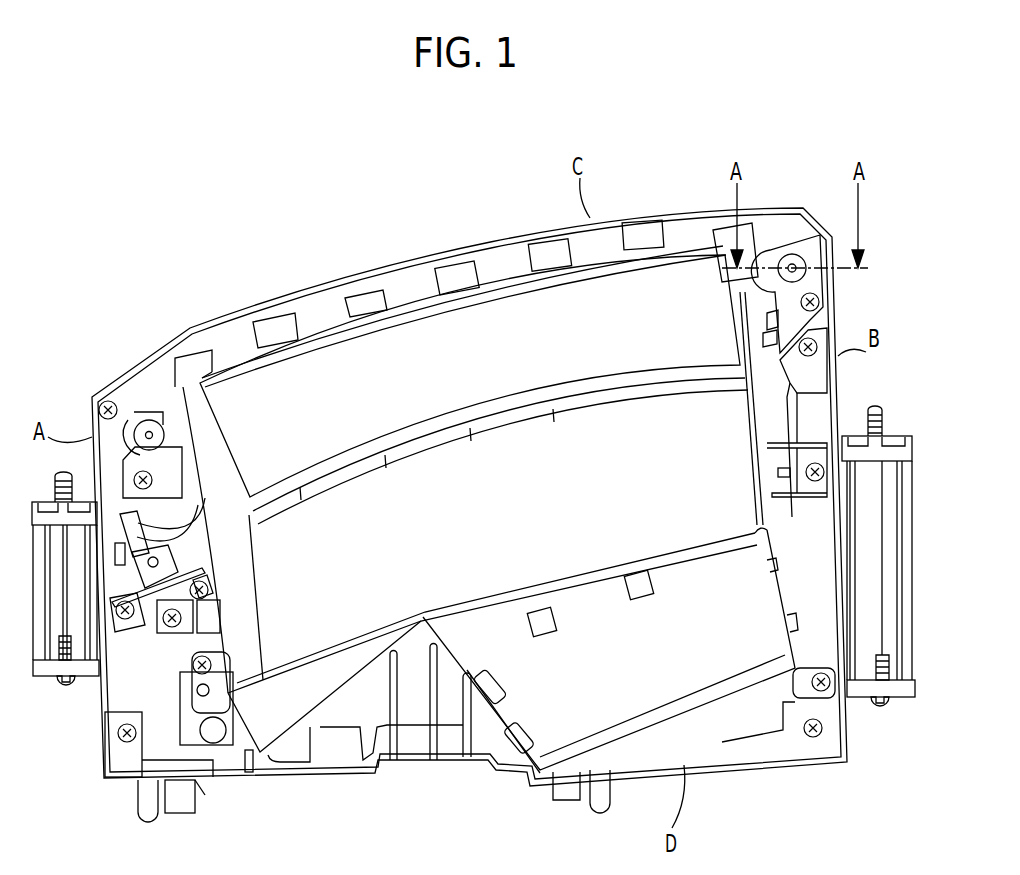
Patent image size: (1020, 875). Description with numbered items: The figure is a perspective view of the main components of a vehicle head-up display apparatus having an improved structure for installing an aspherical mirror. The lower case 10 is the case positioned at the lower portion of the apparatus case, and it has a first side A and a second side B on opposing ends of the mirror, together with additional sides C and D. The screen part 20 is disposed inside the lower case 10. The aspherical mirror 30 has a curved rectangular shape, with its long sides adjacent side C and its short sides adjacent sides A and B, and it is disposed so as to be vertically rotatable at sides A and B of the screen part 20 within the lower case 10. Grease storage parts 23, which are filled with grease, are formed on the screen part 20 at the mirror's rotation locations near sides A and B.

The lower case 10 is at (237, 333).
The screen part 20 is at (387, 560).
The grease storage part 23 is at (149, 418).
The aspherical mirror 30 is at (450, 330).